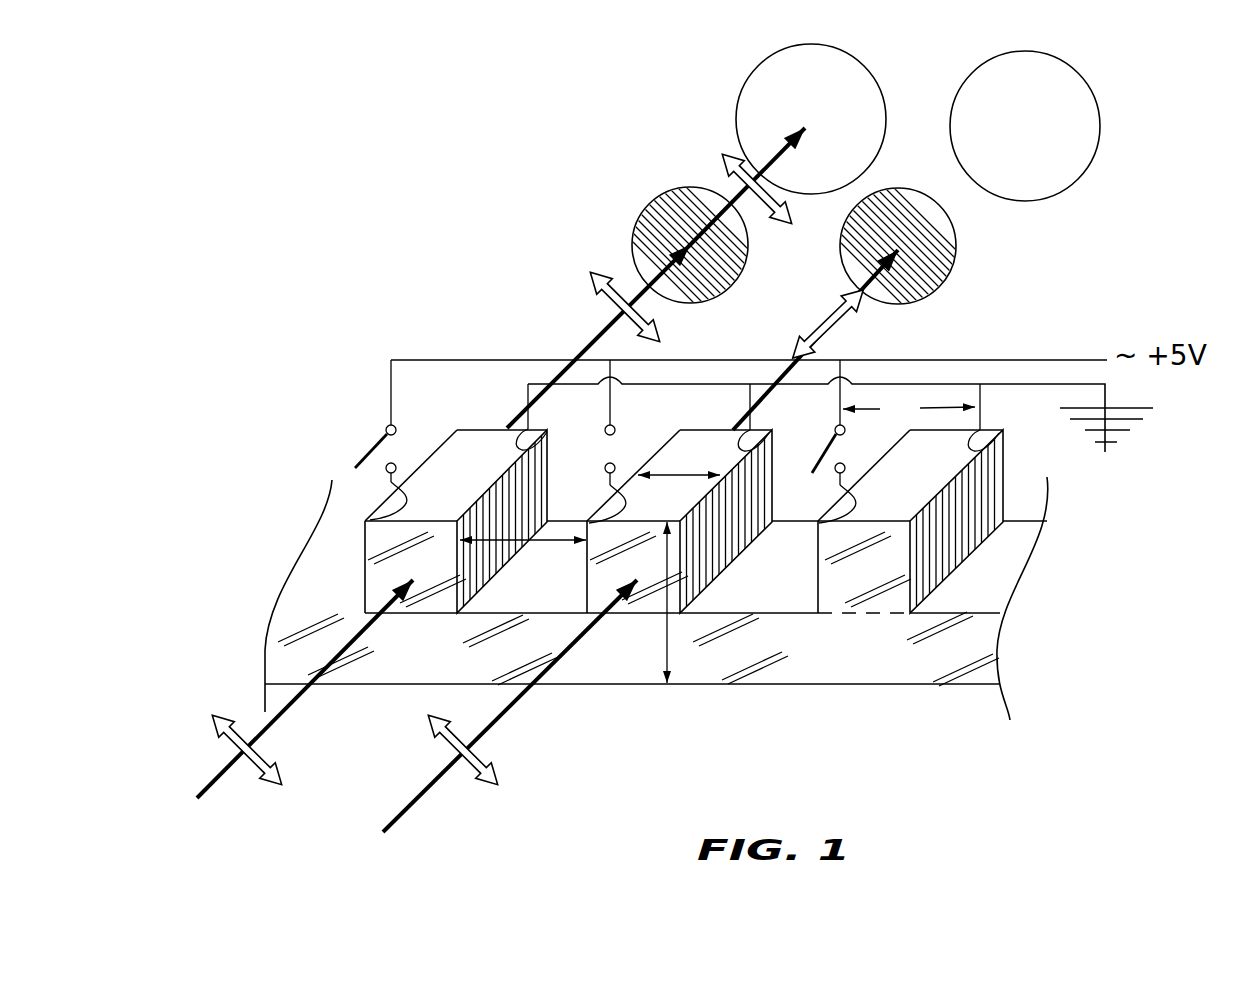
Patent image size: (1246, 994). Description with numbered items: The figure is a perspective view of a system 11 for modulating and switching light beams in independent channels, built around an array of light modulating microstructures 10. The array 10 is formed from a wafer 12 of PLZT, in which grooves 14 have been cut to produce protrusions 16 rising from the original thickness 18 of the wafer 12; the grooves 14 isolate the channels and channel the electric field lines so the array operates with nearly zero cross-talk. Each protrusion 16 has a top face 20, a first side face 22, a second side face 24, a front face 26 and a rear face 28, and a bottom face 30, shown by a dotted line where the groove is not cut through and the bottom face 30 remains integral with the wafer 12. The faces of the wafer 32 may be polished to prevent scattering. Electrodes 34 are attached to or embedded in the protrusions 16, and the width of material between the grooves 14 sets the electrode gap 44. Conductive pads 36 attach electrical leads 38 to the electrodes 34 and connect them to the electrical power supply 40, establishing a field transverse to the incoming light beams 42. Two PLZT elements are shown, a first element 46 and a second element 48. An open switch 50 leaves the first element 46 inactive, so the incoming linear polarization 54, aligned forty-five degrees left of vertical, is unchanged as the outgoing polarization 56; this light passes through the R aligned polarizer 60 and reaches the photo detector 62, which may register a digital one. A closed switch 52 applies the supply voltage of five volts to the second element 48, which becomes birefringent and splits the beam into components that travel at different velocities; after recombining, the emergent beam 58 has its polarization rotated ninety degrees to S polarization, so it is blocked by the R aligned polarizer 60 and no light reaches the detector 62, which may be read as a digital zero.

The array of light modulating microstructures 10 is at (985, 706).
The system 11 is at (327, 283).
The wafer 12 is at (950, 676).
The grooves 14 is at (536, 546).
The protrusions 16 is at (885, 567).
The original thickness 18 is at (669, 620).
The top face 20 is at (447, 457).
The first side face 22 is at (363, 562).
The second side face 24 is at (450, 584).
The front face 26 is at (378, 597).
The rear face 28 is at (483, 429).
The bottom face 30 is at (862, 617).
The faces of the wafer 32 is at (820, 655).
The electrodes 34 is at (700, 557).
The conductive pads 36 is at (852, 488).
The electrical leads 38 is at (909, 410).
The electrical power supply 40 is at (1177, 387).
The incoming light beams 42 is at (412, 802).
The electrode gap 44 is at (693, 473).
The first element 46 is at (432, 557).
The second element 48 is at (641, 573).
The open switch 50 is at (352, 462).
The switch 52 is at (606, 465).
The incoming linear polarization 54 is at (443, 737).
The outgoing polarization 56 is at (593, 297).
The emergent beam 58 is at (815, 333).
The R aligned polarizer 60 is at (653, 213).
The photo detector 62 is at (770, 103).